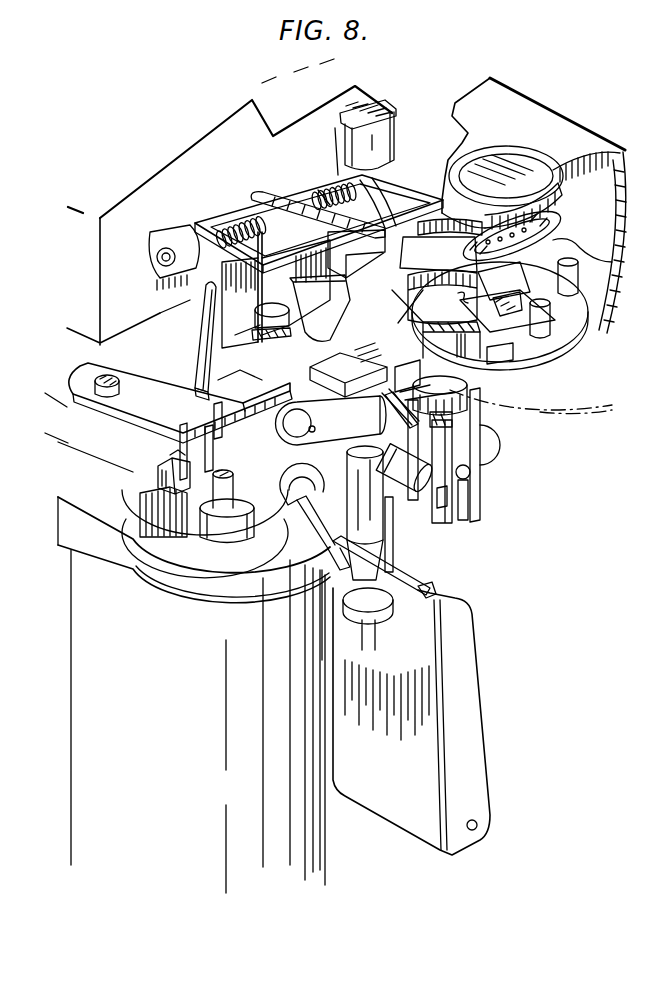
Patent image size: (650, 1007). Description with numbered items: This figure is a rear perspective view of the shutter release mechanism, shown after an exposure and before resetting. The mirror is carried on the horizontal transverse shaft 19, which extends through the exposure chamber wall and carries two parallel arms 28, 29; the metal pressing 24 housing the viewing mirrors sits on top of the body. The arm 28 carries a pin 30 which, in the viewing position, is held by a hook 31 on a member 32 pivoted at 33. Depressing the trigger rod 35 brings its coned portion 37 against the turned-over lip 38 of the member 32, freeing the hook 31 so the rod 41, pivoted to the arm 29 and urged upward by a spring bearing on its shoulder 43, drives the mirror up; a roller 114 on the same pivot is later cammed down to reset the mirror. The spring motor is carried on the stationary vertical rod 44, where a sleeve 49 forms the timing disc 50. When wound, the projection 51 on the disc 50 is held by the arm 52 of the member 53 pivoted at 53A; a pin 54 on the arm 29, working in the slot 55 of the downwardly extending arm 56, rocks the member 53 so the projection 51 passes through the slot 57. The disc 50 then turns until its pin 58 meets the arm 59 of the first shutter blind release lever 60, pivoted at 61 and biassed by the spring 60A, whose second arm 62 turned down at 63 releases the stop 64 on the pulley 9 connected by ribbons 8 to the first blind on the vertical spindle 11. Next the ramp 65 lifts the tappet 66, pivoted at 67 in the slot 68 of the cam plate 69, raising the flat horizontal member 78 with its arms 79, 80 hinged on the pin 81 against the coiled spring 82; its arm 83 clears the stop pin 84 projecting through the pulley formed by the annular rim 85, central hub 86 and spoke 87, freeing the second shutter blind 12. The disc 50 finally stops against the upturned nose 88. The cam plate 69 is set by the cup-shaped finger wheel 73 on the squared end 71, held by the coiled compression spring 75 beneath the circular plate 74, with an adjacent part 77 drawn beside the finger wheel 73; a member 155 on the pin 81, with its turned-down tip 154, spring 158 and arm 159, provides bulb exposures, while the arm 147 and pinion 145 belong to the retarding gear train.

The ribbons 8 is at (108, 546).
The upper pulley 9 is at (260, 490).
The vertical spindle 11 is at (232, 500).
The second shutter blind 12 is at (95, 678).
The horizontal transverse shaft 19 is at (493, 458).
The metal pressing 24 is at (100, 255).
The arm 28 is at (320, 446).
The arm 29 is at (427, 465).
The pin 30 is at (294, 418).
The hook 31 is at (300, 503).
The member 32 is at (454, 731).
The pivot 33 is at (478, 824).
The trigger rod 35 is at (364, 592).
The coned portion 37 is at (352, 558).
The turned-over lip 38 is at (421, 589).
The rod 41 is at (394, 541).
The shoulder 43 is at (413, 482).
The stationary vertical rod 44 is at (417, 457).
The sleeve 49 is at (439, 408).
The disc 50 is at (512, 394).
The projection 51 is at (360, 374).
The arm 52 is at (380, 353).
The member 53 is at (488, 398).
The pivot 53A is at (507, 316).
The pin 54 is at (470, 473).
The slot 55 is at (470, 490).
The downwardly extending arm 56 is at (500, 440).
The slot 57 is at (426, 316).
The pin 58 is at (418, 399).
The arm 59 is at (414, 375).
The first shutter blind release lever 60 is at (237, 440).
The spring 60A is at (101, 353).
The pivot 61 is at (113, 389).
The second arm 62 is at (222, 404).
The downturned portion 63 is at (220, 444).
The stop 64 is at (193, 457).
The wedge-shaped cam or ramp 65 is at (332, 315).
The tappet 66 is at (535, 330).
The pivot 67 is at (503, 291).
The slot 68 is at (497, 283).
The cam plate 69 is at (500, 320).
The squared end 71 is at (438, 287).
The cup-shaped finger wheel 73 is at (546, 213).
The circular plate 74 is at (503, 168).
The coiled compression spring 75 is at (520, 222).
The ring 77 is at (530, 226).
The flat horizontal member 78 is at (347, 291).
The arm 79 is at (410, 190).
The horizontal arm 80 is at (252, 290).
The pin 81 is at (252, 202).
The coiled spring 82 is at (228, 220).
The arm 83 is at (187, 343).
The stop pin 84 is at (173, 471).
The annular rim 85 is at (150, 531).
The central hub 86 is at (233, 520).
The spoke 87 is at (198, 493).
The upturned nose 88 is at (335, 375).
The roller 114 is at (440, 490).
The pinion 145 is at (208, 338).
The arm 147 is at (248, 348).
The turned-down tip 154 is at (357, 252).
The member 155 is at (285, 203).
The spring 158 is at (332, 183).
The arm 159 is at (182, 323).